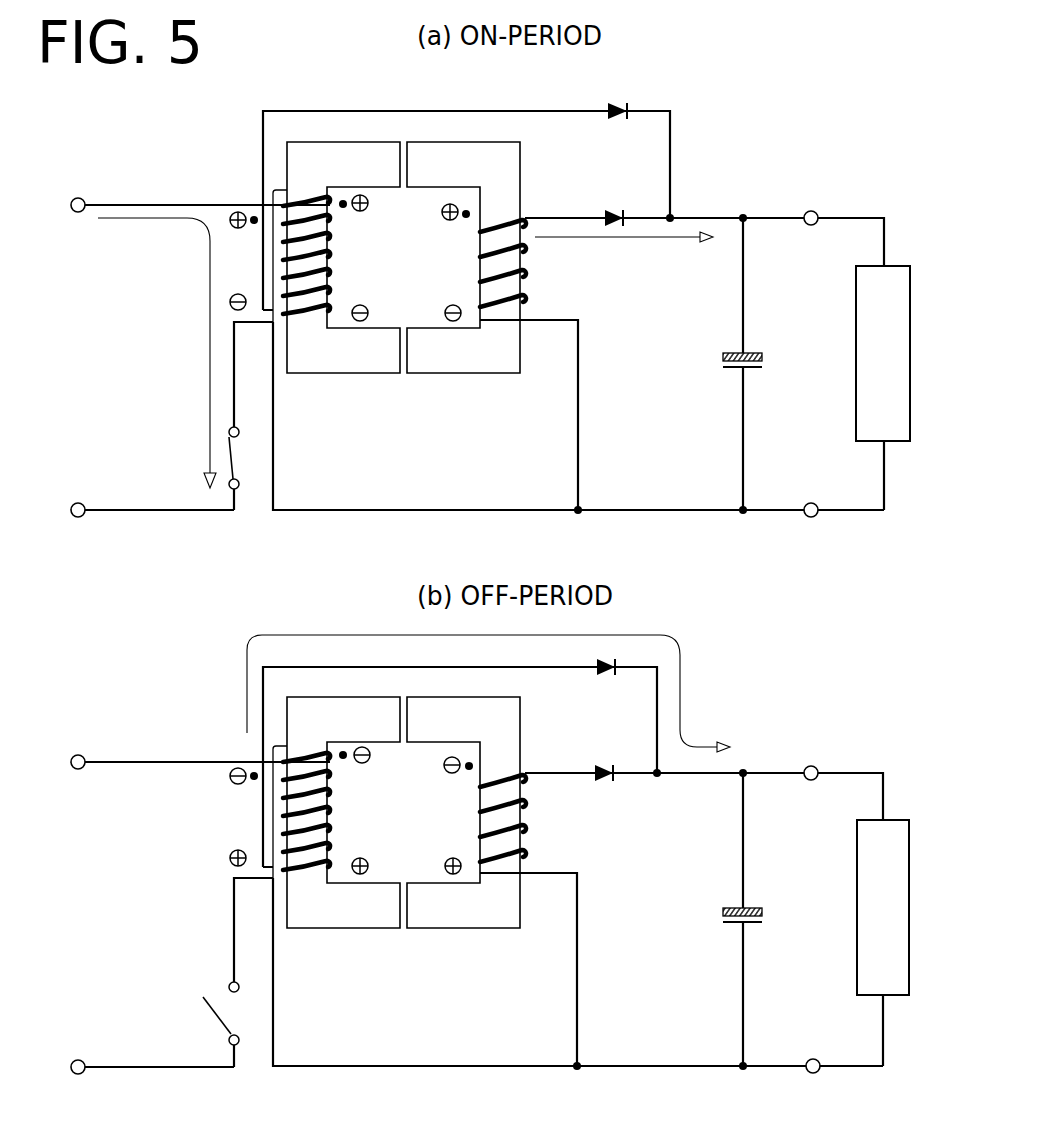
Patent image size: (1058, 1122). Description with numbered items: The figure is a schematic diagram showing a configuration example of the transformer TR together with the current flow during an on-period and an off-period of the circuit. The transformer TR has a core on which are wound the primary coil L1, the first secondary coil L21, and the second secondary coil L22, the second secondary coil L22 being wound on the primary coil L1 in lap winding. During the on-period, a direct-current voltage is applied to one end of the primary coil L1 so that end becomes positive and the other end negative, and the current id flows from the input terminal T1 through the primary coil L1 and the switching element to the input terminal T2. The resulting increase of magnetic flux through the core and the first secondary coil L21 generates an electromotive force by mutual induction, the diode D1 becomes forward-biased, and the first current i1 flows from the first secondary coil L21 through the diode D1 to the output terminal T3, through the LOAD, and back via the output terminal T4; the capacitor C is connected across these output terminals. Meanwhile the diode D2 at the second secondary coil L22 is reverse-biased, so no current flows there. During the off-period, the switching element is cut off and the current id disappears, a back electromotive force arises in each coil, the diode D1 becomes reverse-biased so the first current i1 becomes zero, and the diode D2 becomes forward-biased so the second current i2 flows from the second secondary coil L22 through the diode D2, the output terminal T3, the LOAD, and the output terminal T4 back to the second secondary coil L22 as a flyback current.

The input terminal T1 is at (186, 483).
The input terminal T2 is at (138, 788).
The output terminal T3 is at (811, 479).
The output terminal T4 is at (813, 805).
The diode D1 is at (609, 497).
The diode D2 is at (611, 391).
The transformer TR is at (421, 237).
The primary coil L1 is at (316, 197).
The first secondary coil L21 is at (479, 541).
The second secondary coil L22 is at (328, 222).
The output capacitor C is at (756, 641).
The load LOAD is at (883, 630).
The current id is at (157, 353).
The first current i1 is at (624, 250).
The second current i2 is at (488, 693).